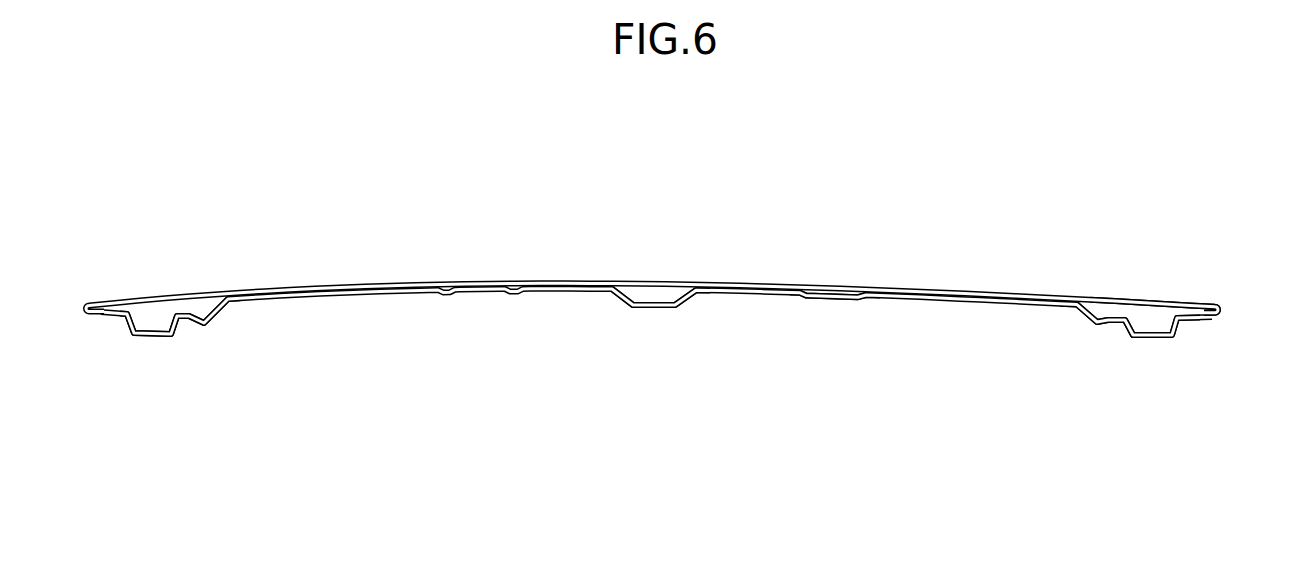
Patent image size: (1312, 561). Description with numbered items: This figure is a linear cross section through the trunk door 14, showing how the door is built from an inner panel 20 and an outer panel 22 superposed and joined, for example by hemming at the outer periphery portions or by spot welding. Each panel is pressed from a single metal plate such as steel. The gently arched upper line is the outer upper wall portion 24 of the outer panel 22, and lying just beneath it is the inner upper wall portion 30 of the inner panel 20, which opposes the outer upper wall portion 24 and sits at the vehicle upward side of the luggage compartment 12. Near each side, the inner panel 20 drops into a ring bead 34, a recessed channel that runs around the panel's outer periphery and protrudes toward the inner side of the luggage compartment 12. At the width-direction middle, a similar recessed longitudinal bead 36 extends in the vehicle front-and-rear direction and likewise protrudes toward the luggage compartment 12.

The luggage compartment 12 is at (656, 551).
The trunk door 14 is at (689, 213).
The inner panel 20 is at (1184, 328).
The outer panel 22 is at (1176, 294).
The outer upper wall portion 24 is at (822, 280).
The inner upper wall portion 30 is at (845, 299).
The ring bead 34 is at (156, 337).
The longitudinal bead 36 is at (655, 308).